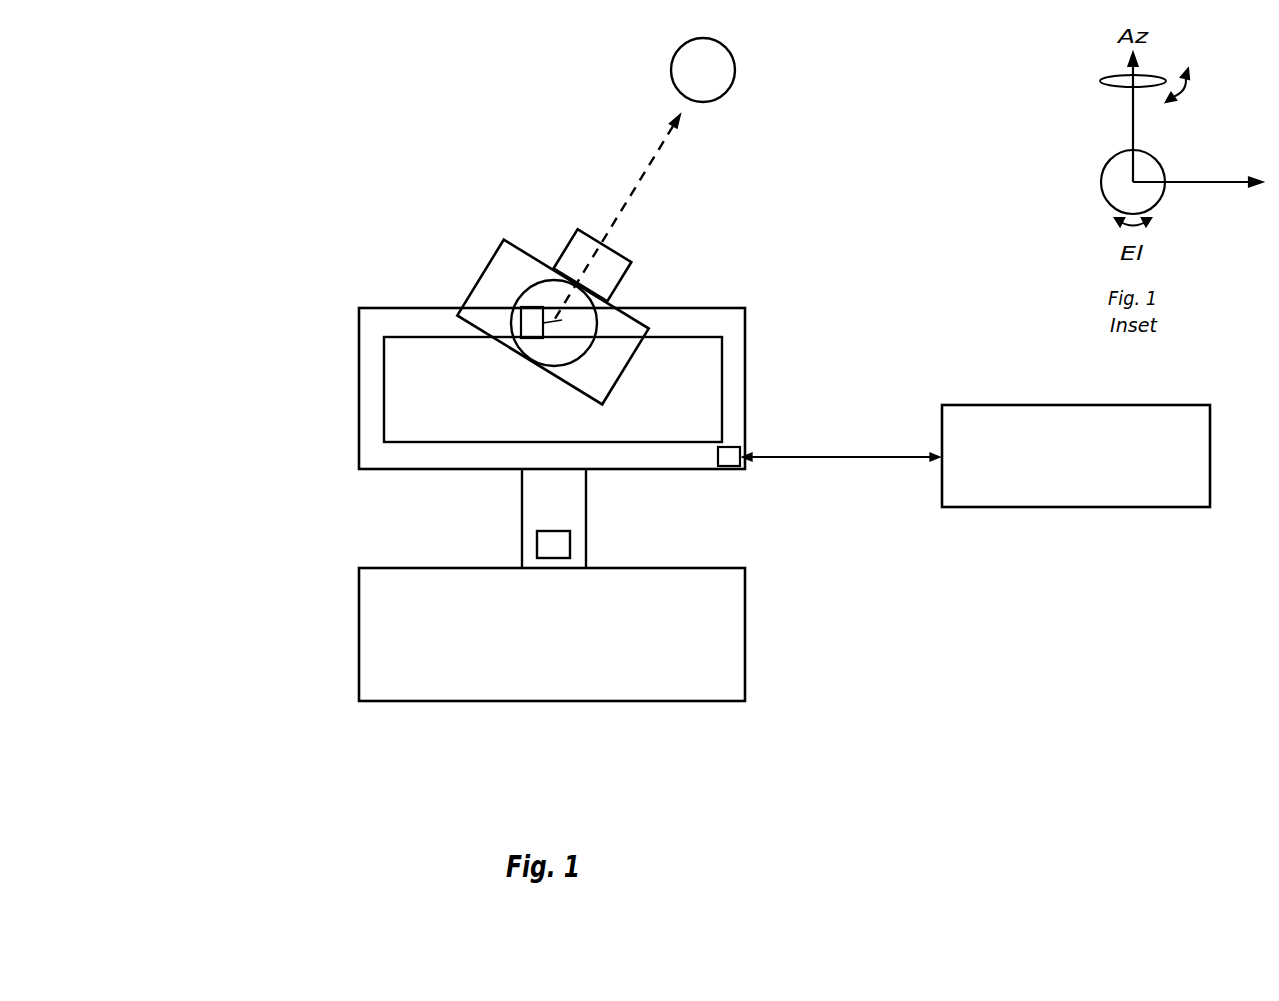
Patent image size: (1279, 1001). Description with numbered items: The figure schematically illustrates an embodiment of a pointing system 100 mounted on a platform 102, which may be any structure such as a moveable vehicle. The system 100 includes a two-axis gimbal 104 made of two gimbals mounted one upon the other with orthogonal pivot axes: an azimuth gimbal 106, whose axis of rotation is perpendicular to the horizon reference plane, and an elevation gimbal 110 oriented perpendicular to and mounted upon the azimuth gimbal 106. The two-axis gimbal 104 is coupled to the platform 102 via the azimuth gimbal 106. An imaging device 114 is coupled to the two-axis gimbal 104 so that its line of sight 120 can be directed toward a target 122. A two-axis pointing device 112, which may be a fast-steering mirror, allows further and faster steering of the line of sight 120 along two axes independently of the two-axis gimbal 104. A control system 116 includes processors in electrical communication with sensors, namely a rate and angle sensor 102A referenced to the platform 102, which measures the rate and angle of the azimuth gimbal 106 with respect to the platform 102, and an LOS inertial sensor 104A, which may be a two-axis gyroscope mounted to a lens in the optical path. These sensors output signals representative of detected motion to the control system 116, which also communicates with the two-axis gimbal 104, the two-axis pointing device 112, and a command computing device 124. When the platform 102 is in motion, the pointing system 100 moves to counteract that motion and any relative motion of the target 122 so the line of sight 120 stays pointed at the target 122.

The pointing system 100 is at (252, 213).
The platform 102 is at (552, 634).
The rate and angle sensor 102A is at (537, 543).
The two-axis gimbal 104 is at (358, 377).
The LOS inertial sensor 104A is at (552, 325).
The azimuth gimbal 106 is at (587, 510).
The elevation gimbal 110 is at (495, 290).
The two-axis pointing device 112 is at (573, 323).
The imaging device 114 is at (523, 305).
The control system 116 is at (731, 447).
The line of sight (LOS) 120 is at (637, 187).
The target 122 is at (737, 67).
The command computing device 124 is at (1076, 456).